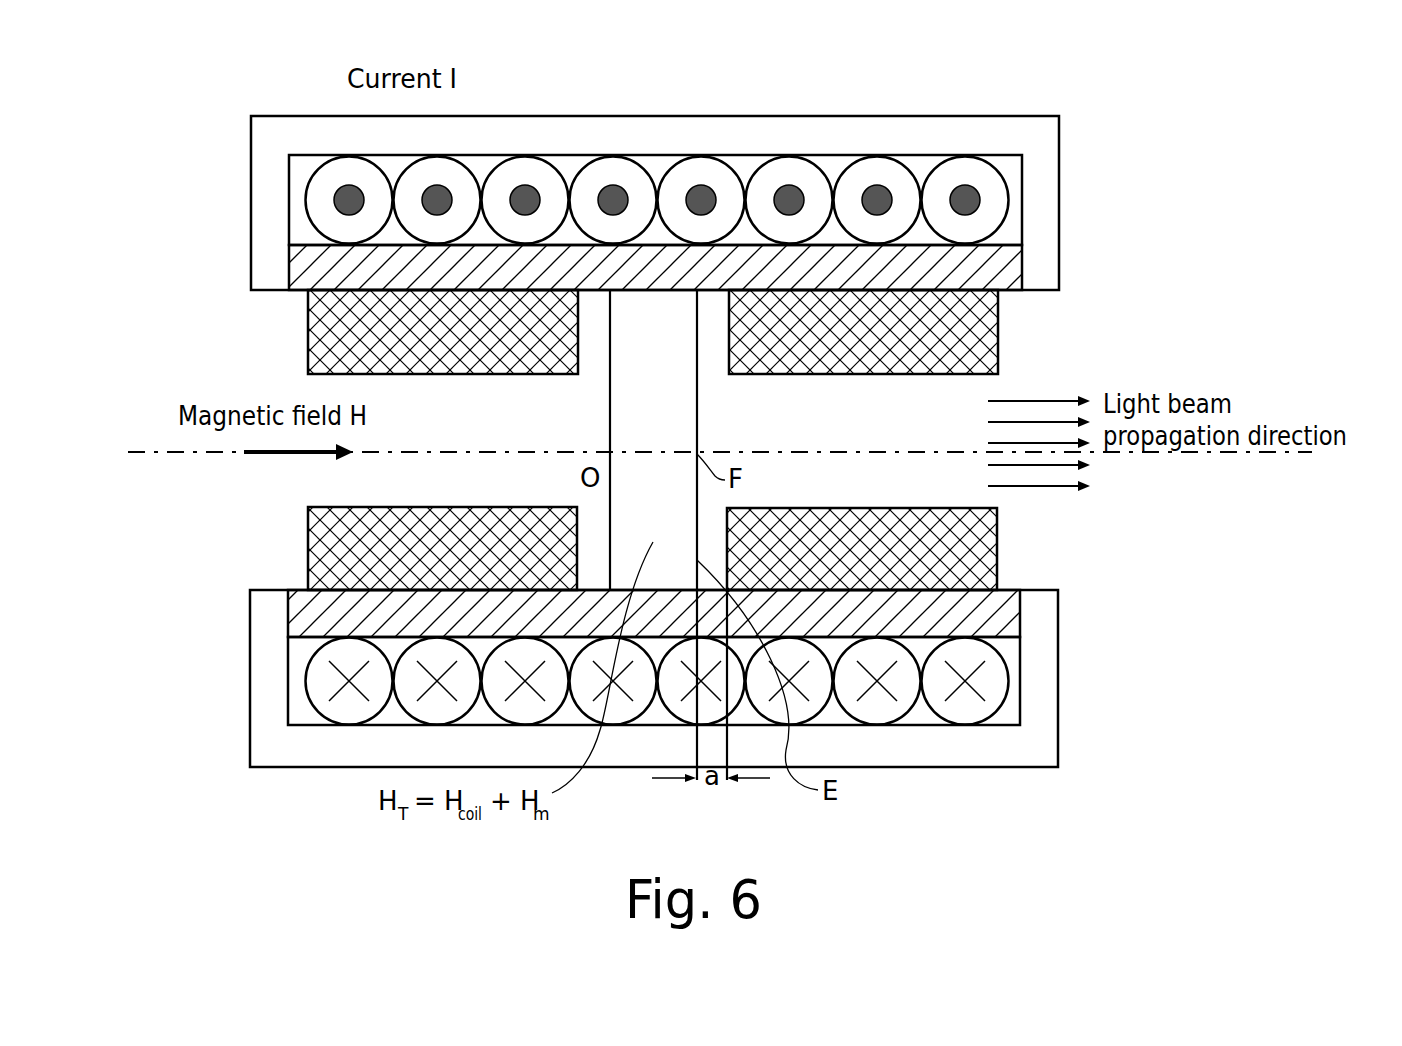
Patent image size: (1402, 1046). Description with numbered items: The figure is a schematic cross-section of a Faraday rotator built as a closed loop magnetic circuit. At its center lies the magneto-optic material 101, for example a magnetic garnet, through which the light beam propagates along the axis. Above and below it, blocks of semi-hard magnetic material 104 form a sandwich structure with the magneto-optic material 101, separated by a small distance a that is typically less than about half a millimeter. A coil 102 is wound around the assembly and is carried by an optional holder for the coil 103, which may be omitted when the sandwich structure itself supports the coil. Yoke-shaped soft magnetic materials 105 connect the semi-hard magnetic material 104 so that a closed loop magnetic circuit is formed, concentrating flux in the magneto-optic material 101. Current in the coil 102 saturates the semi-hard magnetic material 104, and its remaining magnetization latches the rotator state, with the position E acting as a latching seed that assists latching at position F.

The magneto-optic material 101 is at (610, 402).
The coil 102 is at (702, 194).
The holder for the coil 103 is at (886, 265).
The semi-hard magnetic material 104 is at (759, 472).
The soft magnetic material 105 is at (896, 149).